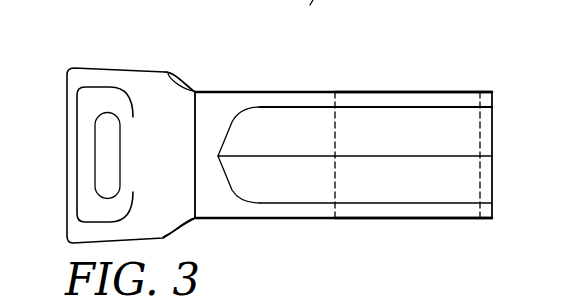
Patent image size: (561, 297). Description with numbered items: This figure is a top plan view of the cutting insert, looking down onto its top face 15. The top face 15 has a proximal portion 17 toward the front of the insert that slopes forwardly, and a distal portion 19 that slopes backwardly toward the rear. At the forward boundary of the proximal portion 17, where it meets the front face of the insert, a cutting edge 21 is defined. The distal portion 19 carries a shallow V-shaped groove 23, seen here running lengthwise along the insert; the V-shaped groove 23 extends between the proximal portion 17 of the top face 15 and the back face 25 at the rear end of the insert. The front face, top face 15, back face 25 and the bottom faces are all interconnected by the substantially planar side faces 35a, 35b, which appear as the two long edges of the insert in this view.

The top face 15 is at (232, 83).
The proximal portion 17 is at (150, 80).
The distal portion 19 is at (304, 122).
The cutting edge 21 is at (67, 148).
The V-shaped groove 23 is at (407, 156).
The back face 25 is at (492, 156).
The side face 35a is at (413, 218).
The side face 35b is at (390, 92).